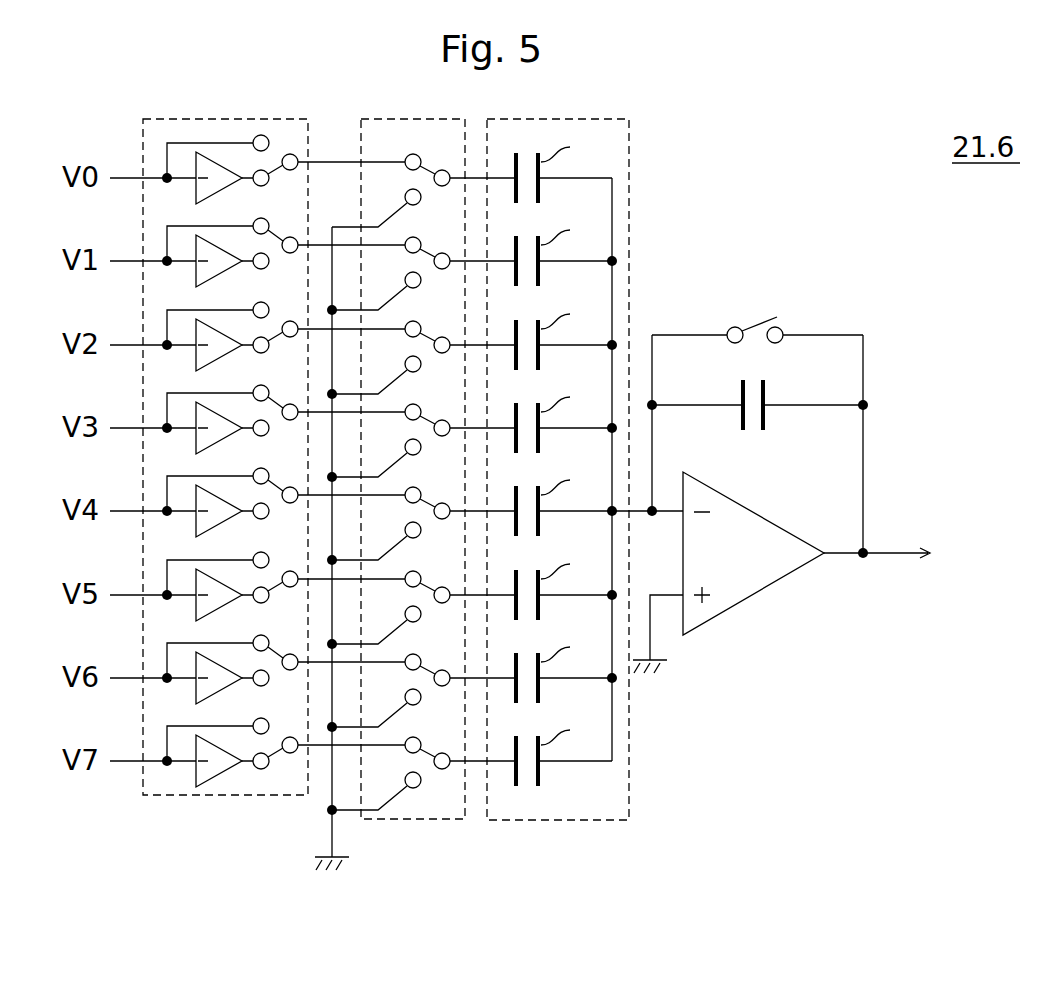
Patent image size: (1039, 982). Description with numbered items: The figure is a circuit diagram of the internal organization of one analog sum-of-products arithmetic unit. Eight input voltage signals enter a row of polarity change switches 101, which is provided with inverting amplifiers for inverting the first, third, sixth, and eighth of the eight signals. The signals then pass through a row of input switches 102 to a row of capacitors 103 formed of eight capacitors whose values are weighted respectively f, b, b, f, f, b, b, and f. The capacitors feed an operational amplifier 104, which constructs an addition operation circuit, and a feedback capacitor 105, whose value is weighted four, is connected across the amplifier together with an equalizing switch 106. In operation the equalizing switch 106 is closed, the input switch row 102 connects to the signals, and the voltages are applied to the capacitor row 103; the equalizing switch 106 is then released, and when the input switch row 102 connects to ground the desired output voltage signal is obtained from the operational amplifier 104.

The polarity change switch row 101 is at (198, 795).
The input switch row 102 is at (428, 819).
The capacitor row 103 is at (590, 820).
The operational amplifier 104 is at (768, 588).
The feedback capacitor 105 is at (766, 420).
The equalizing switch 106 is at (755, 327).